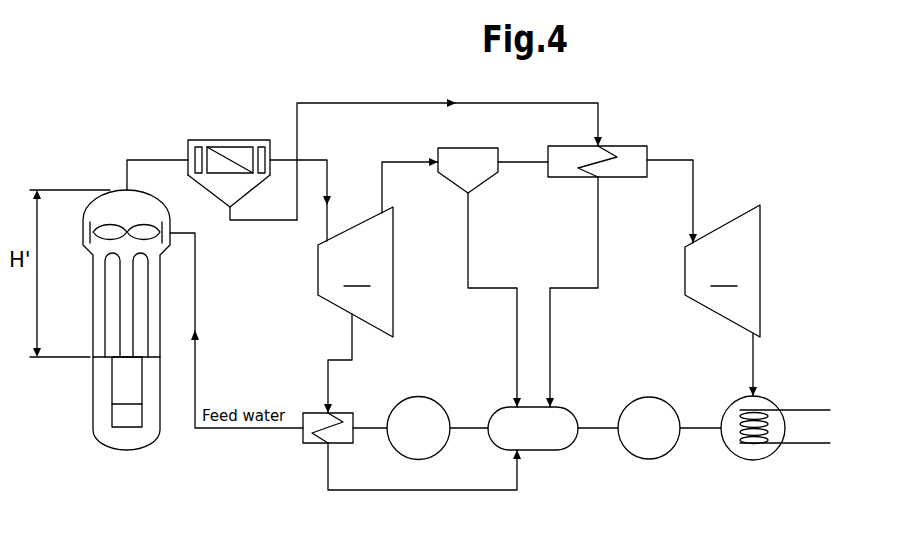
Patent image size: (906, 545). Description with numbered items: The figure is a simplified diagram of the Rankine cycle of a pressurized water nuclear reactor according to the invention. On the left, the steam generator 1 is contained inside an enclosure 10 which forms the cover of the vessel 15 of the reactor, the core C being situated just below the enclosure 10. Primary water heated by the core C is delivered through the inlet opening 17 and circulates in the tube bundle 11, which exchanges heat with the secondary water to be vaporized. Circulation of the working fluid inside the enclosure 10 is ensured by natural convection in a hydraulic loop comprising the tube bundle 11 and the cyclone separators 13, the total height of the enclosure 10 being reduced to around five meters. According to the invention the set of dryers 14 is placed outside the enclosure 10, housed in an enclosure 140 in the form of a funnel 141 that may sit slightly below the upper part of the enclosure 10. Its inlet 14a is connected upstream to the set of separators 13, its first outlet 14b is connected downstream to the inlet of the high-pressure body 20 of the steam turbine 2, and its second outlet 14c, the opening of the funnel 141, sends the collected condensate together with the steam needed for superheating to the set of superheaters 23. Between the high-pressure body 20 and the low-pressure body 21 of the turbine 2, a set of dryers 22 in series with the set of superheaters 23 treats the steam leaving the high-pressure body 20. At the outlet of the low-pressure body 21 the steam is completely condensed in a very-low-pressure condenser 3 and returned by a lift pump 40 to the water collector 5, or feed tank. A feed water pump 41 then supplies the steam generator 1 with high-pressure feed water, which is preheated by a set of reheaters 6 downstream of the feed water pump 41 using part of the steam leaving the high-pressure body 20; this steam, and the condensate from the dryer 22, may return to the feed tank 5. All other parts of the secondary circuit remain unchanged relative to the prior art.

The steam generator 1 is at (72, 210).
The steam turbine 2 is at (688, 132).
The condenser 3 is at (765, 458).
The water collector 5 is at (537, 452).
The set of reheaters 6 is at (315, 443).
The enclosure 10 is at (161, 281).
The tube bundle 11 is at (97, 305).
The set of separators 13 is at (83, 232).
The set of dryers 14 is at (210, 137).
The inlet 14a is at (187, 160).
The first outlet 14b is at (272, 160).
The second outlet 14c is at (230, 207).
The vessel 15 is at (93, 373).
The inlet opening 17 is at (127, 190).
The high-pressure body 20 is at (355, 272).
The low-pressure body 21 is at (722, 271).
The set of dryers 22 is at (474, 148).
The set of superheaters 23 is at (628, 146).
The lift pump 40 is at (667, 397).
The feed water pump 41 is at (435, 397).
The enclosure 140 is at (228, 140).
The funnel 141 is at (206, 191).
The core C is at (127, 415).